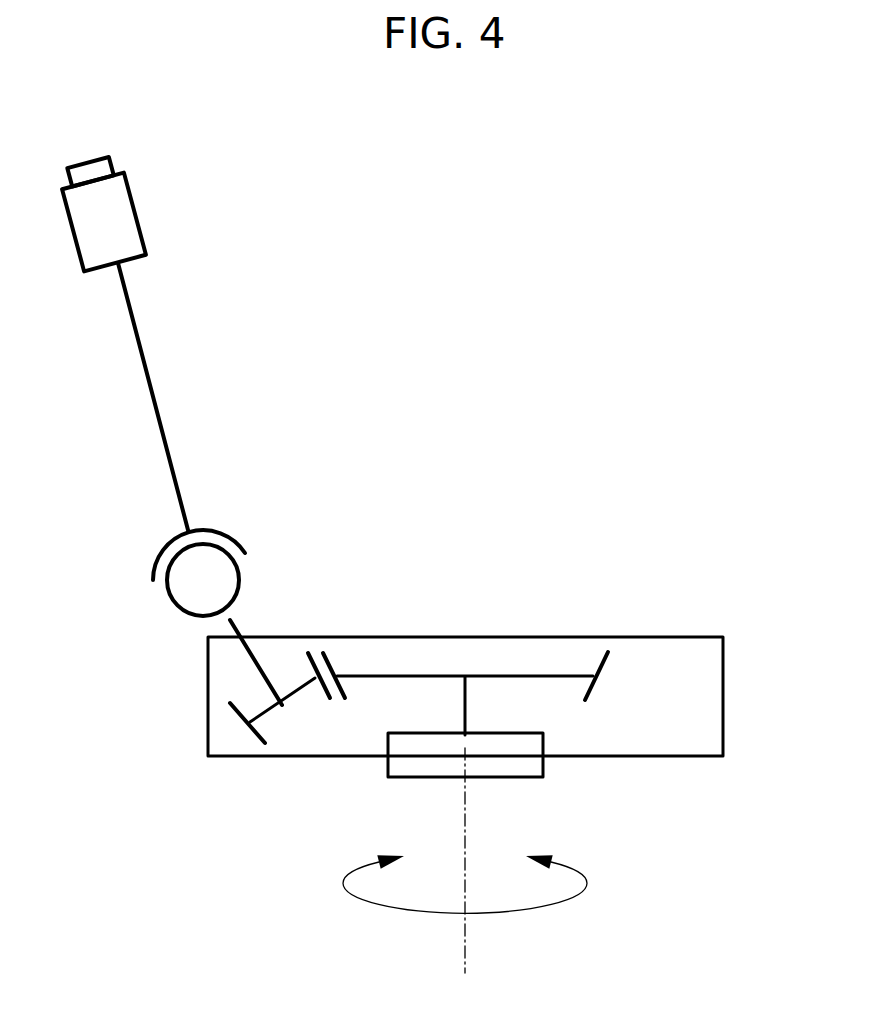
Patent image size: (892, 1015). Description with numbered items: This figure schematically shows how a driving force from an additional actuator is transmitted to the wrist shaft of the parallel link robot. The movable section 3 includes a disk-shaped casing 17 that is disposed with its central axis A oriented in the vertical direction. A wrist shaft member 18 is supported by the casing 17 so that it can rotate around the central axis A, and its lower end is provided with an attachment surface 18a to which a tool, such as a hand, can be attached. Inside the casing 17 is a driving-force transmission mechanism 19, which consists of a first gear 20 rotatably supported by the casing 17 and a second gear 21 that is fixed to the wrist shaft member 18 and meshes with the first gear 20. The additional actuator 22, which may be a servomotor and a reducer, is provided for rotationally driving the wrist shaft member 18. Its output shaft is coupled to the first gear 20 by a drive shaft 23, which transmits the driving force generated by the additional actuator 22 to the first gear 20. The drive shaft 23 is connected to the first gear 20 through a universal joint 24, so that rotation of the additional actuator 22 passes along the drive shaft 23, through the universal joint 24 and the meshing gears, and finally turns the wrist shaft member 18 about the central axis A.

The movable section 3 is at (468, 719).
The casing 17 is at (725, 692).
The wrist shaft member 18 is at (447, 798).
The attachment surface 18a is at (510, 778).
The driving-force transmission mechanism 19 is at (308, 728).
The first gear 20 is at (250, 733).
The second gear 21 is at (340, 657).
The additional actuator 22 is at (137, 208).
The drive shaft 23 is at (147, 385).
The universal joint 24 is at (167, 588).
The central axis A is at (467, 950).